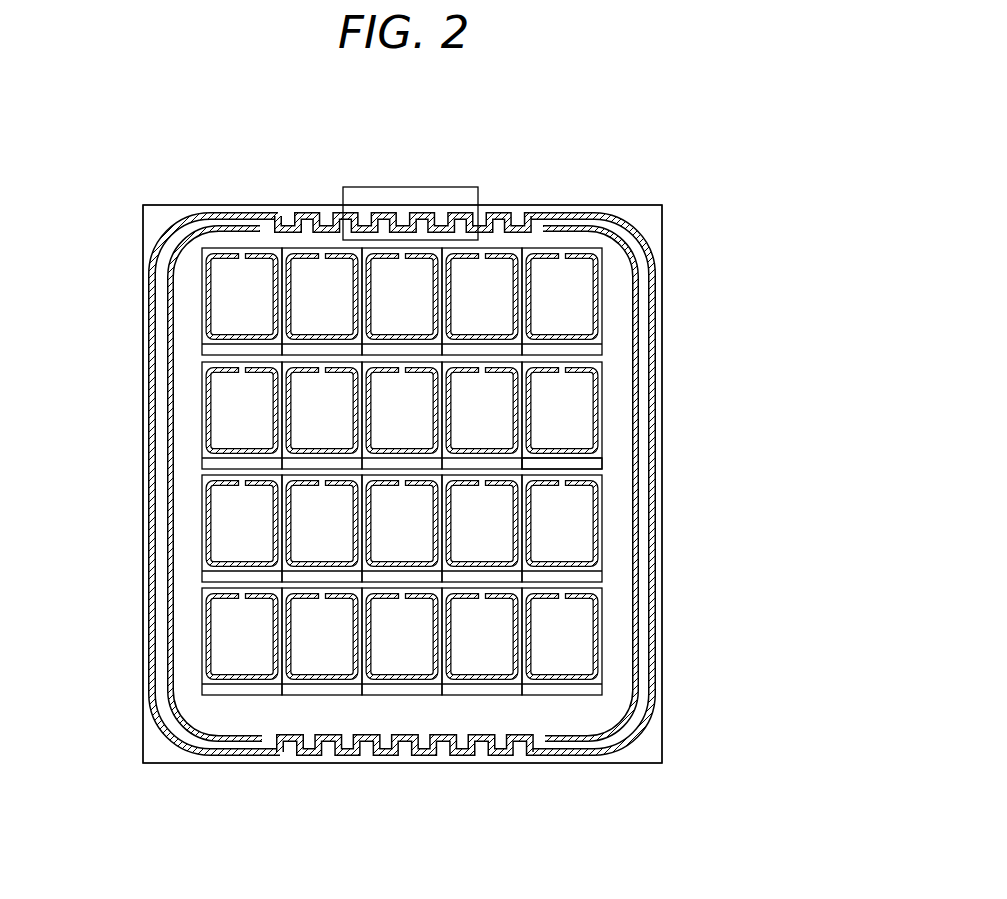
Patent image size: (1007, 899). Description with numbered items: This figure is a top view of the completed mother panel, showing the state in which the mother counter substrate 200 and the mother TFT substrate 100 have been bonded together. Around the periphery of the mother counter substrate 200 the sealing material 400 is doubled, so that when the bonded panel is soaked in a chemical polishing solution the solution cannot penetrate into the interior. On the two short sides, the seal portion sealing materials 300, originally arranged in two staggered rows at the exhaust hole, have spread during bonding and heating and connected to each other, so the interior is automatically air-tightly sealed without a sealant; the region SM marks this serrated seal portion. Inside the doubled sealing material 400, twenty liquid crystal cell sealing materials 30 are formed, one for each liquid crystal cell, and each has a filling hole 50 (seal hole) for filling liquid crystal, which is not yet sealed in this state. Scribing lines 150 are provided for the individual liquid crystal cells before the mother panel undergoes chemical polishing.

The mother TFT substrate 100 is at (603, 205).
The mother counter substrate 200 is at (402, 484).
The sealing material 400 is at (147, 291).
The seal portion sealing materials 300 is at (313, 213).
The serration region SM is at (401, 187).
The filling hole 50 is at (229, 254).
The liquid crystal cell sealing material 30 is at (557, 445).
The scribing lines 150 is at (600, 463).